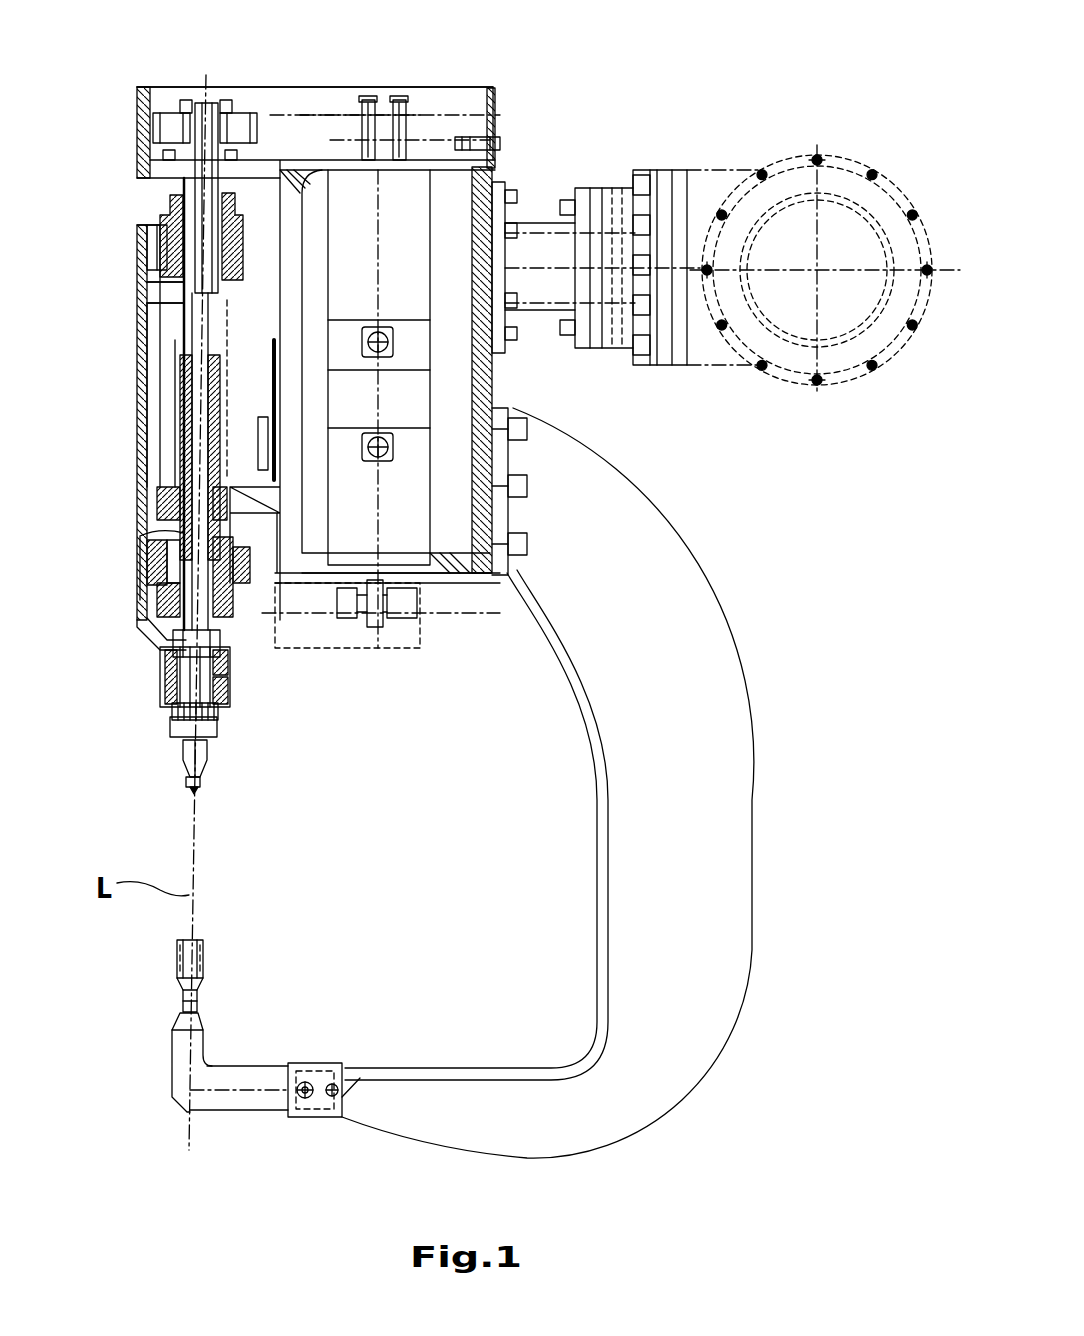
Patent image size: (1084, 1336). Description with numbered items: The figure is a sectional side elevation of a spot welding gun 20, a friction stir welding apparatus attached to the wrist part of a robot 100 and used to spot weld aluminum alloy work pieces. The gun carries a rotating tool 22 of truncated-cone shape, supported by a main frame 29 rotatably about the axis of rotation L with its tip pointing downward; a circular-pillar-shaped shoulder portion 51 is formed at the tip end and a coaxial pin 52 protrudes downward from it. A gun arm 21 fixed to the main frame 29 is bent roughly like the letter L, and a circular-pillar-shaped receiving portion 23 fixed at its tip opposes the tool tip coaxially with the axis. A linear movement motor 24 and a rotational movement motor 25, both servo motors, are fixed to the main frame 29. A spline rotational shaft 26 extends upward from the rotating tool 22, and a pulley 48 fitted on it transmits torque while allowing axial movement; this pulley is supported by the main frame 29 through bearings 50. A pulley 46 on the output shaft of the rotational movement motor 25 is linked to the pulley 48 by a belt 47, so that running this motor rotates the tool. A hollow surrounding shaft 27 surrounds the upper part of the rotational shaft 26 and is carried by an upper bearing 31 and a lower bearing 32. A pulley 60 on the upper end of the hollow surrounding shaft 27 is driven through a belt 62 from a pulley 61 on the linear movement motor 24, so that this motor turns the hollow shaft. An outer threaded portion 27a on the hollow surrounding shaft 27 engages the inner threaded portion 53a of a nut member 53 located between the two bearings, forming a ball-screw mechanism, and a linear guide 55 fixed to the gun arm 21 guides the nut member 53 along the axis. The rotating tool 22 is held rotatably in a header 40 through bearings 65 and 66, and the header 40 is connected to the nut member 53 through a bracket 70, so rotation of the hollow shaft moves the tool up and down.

The spot welding gun 20 is at (525, 97).
The gun arm 21 is at (717, 722).
The rotating tool 22 is at (210, 746).
The receiving portion 23 is at (198, 1004).
The linear movement motor 24 is at (407, 235).
The rotational movement motor 25 is at (403, 517).
The rotational shaft 26 is at (147, 534).
The hollow surrounding shaft 27 is at (182, 325).
The outer threaded portion 27a is at (182, 303).
The main frame 29 is at (490, 373).
The bearing 31 is at (172, 183).
The bearing 32 is at (160, 498).
The header 40 is at (155, 678).
The pulley 46 is at (403, 610).
The belt 47 is at (318, 607).
The pulley 48 is at (157, 604).
The bearings 50 is at (150, 574).
The shoulder portion 51 is at (203, 781).
The pin 52 is at (197, 790).
The nut member 53 is at (170, 215).
The inner threaded portion 53a is at (165, 255).
The linear guide 55 is at (263, 318).
The pulley 60 is at (232, 108).
The pulley 61 is at (388, 100).
The belt 62 is at (328, 112).
The bearing 65 is at (228, 662).
The bearing 66 is at (228, 692).
The bracket 70 is at (150, 412).
The robot 100 is at (750, 376).